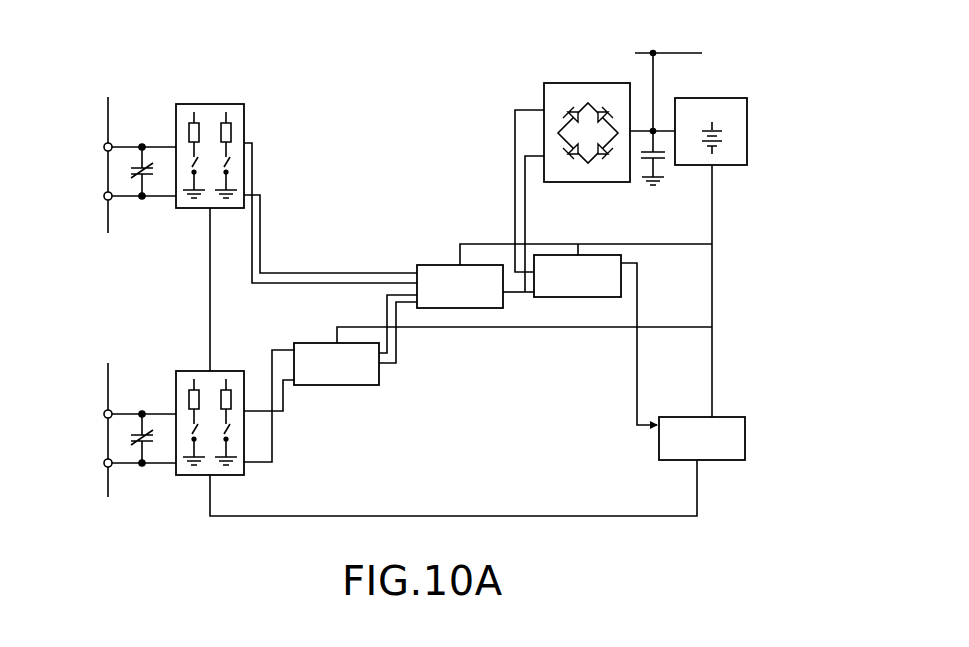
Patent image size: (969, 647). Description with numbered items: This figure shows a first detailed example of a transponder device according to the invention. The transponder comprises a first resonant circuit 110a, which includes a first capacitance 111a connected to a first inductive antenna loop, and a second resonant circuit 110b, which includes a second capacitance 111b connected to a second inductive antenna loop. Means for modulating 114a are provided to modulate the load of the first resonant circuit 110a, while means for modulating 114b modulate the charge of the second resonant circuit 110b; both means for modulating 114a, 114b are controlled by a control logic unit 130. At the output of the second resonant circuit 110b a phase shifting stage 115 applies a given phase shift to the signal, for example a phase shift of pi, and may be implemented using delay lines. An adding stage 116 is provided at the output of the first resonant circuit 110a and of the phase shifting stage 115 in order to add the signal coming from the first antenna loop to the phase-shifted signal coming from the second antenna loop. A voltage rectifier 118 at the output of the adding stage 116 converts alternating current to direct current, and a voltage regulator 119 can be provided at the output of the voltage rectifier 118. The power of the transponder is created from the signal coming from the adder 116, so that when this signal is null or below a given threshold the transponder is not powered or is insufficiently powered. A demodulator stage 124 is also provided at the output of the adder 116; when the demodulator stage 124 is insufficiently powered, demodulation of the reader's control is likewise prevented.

The first resonant circuit 110a is at (93, 171).
The first capacitance 111a is at (153, 166).
The means for modulating 114a is at (238, 130).
The second resonant circuit 110b is at (95, 449).
The second capacitance 111b is at (153, 433).
The means for modulating 114b is at (185, 472).
The phase shifting stage 115 is at (343, 372).
The adding stage 116 is at (475, 298).
The voltage rectifier 118 is at (573, 93).
The voltage regulator 119 is at (730, 155).
The demodulator stage 124 is at (572, 290).
The control logic unit 130 is at (713, 452).